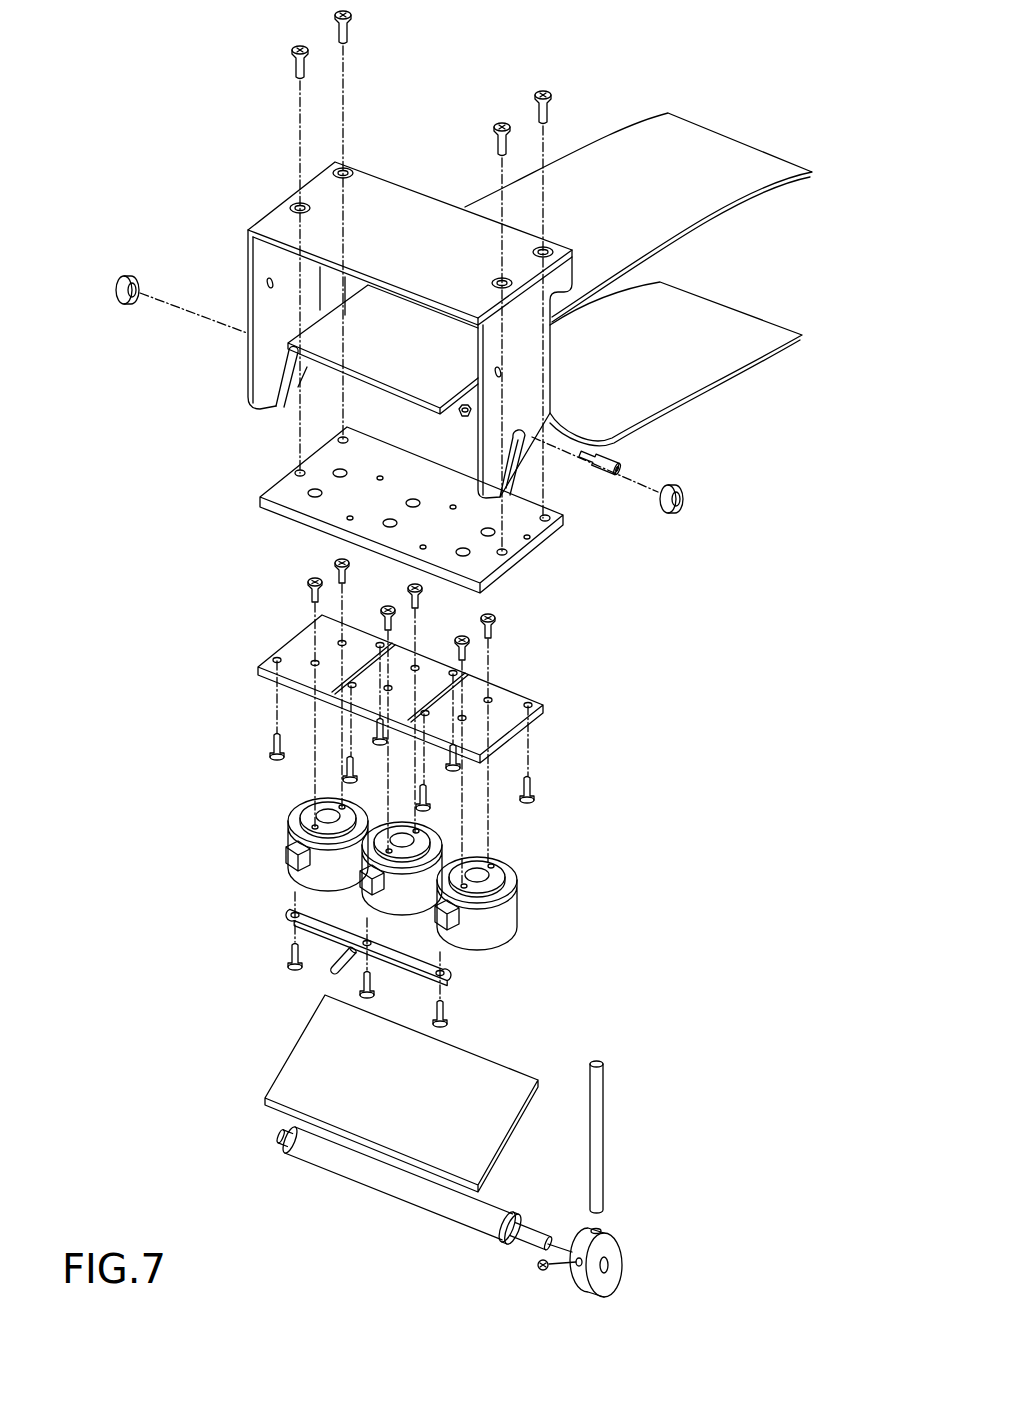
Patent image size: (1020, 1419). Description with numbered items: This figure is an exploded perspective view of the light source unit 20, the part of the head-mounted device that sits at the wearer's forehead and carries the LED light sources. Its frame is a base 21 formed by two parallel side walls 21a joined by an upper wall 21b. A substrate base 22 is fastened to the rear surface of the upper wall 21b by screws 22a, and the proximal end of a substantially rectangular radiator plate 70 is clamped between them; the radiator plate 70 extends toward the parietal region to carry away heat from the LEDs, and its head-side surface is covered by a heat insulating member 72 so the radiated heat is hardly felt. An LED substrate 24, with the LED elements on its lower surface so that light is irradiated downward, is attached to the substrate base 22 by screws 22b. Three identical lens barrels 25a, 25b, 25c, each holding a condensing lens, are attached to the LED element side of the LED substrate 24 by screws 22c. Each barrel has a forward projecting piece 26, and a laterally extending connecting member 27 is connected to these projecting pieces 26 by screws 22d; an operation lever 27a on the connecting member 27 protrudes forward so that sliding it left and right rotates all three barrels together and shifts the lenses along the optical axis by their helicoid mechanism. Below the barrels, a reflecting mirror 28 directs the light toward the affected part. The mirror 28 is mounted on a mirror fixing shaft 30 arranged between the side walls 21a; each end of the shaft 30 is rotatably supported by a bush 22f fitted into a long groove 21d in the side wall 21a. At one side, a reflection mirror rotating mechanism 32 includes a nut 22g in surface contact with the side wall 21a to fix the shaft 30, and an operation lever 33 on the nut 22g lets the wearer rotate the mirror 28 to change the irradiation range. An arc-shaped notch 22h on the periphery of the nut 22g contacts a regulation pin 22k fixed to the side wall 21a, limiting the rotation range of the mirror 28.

The light source unit 20 is at (810, 587).
The base 21 is at (282, 218).
The side wall 21a is at (263, 272).
The upper wall 21b is at (393, 210).
The long groove 21d is at (267, 392).
The substrate base 22 is at (288, 497).
The screw 22a is at (293, 57).
The screw 22b is at (343, 782).
The screw 22c is at (305, 593).
The screw 22d is at (282, 974).
The bush 22f is at (117, 291).
The nut 22g is at (612, 1253).
The arc-shaped notch 22h is at (612, 1277).
The regulation pin 22k is at (615, 468).
The LED substrate 24 is at (505, 713).
The lens barrel 25a is at (305, 893).
The lens barrel 25b is at (397, 920).
The lens barrel 25c is at (503, 937).
The projecting piece 26 is at (292, 868).
The connecting member 27 is at (318, 942).
The operation lever 27a is at (337, 985).
The reflecting mirror 28 is at (295, 1090).
The mirror fixing shaft 30 is at (403, 1218).
The reflection mirror rotating mechanism 32 is at (672, 1200).
The operation lever 33 is at (598, 1147).
The radiator plate 70 is at (723, 168).
The heat insulating member 72 is at (723, 340).